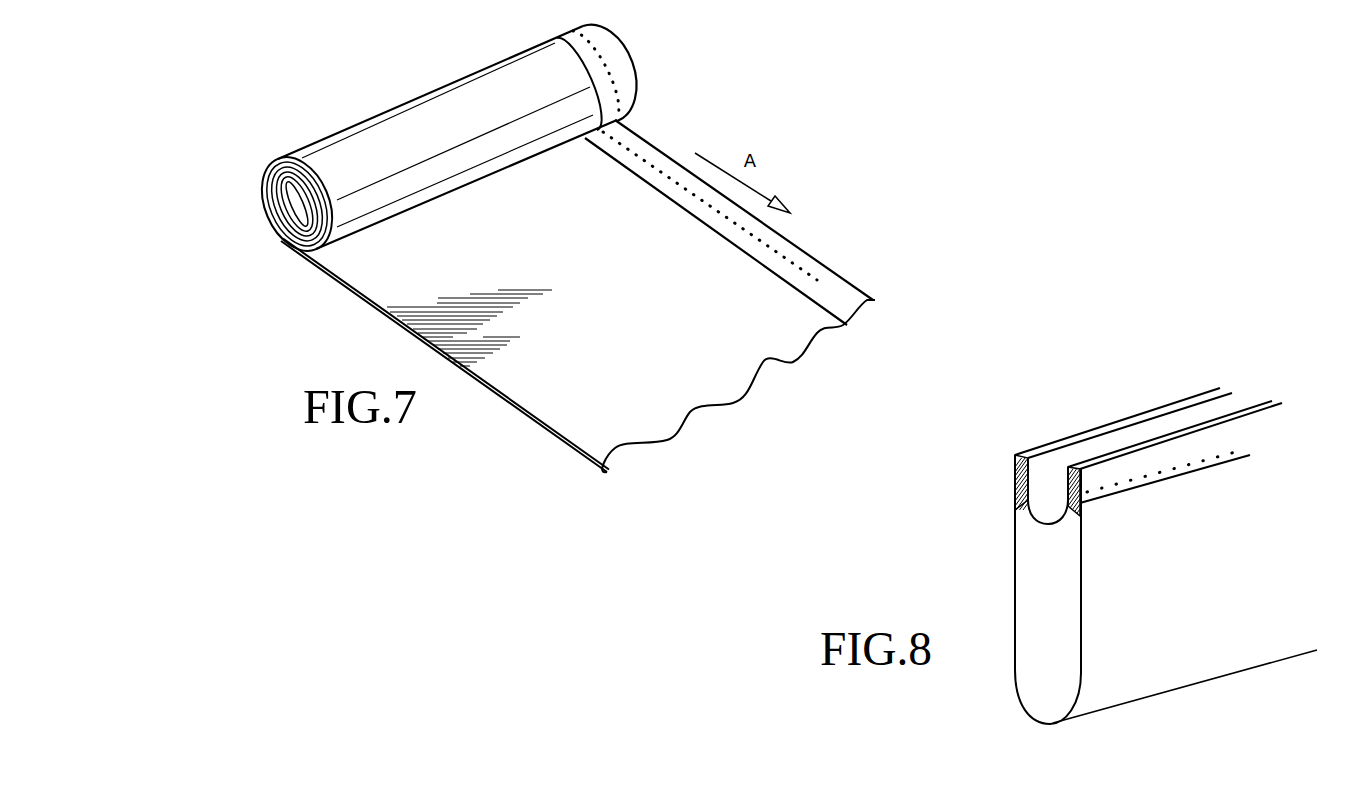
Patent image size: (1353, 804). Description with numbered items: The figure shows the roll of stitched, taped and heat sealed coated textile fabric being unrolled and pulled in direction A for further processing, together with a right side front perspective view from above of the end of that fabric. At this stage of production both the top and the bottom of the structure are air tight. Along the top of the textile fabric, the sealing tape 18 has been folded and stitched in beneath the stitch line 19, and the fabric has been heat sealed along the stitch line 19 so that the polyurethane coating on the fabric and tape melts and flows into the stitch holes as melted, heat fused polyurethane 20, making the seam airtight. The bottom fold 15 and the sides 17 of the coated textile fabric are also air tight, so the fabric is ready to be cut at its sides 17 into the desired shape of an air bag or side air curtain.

In FIG. 8, the bottom fold 15 is at (1067, 724).
In FIG. 8, the sides 17 is at (1173, 668).
In FIG. 8, the sealing tape 18 is at (1043, 524).
In FIG. 7, the stitch line 19 is at (790, 266).
In FIG. 8, the stitch line 19 is at (1113, 487).
In FIG. 8, the heat fused polyurethane 20 is at (1017, 483).